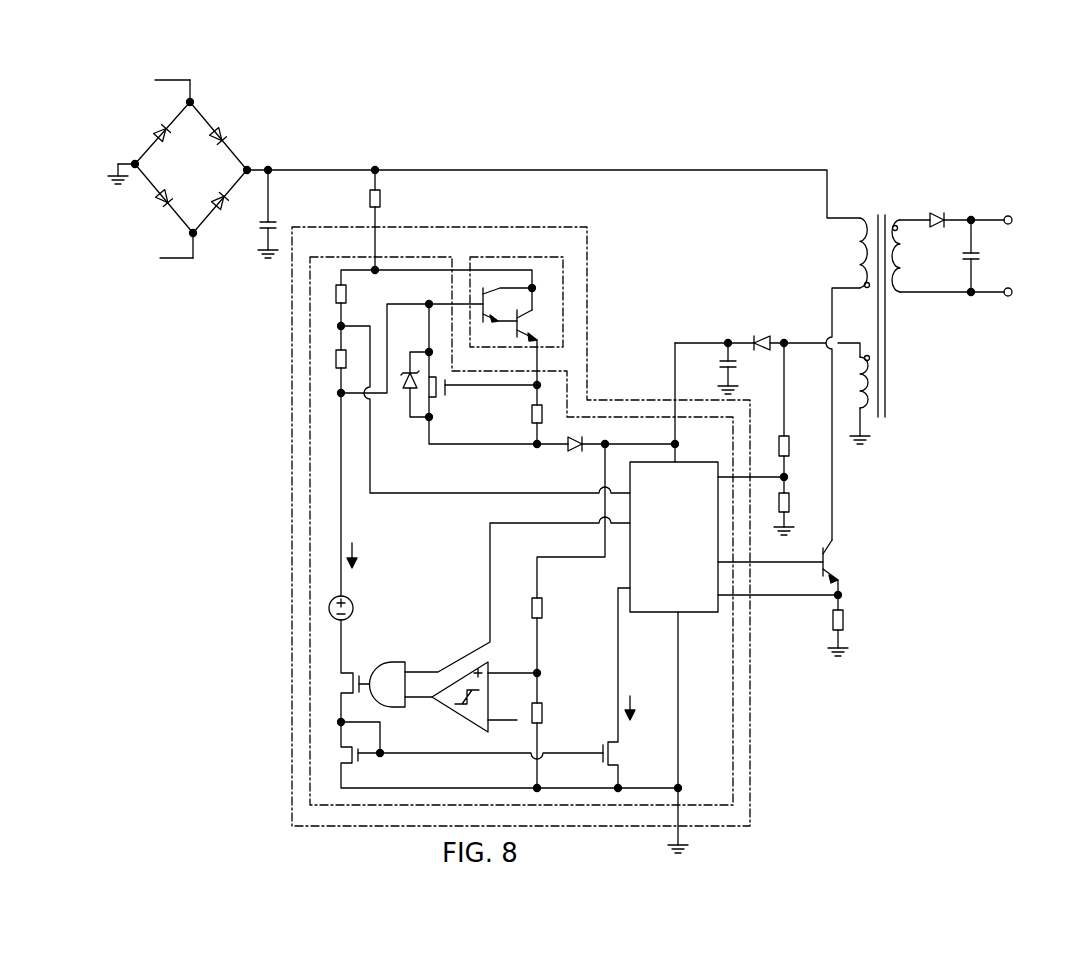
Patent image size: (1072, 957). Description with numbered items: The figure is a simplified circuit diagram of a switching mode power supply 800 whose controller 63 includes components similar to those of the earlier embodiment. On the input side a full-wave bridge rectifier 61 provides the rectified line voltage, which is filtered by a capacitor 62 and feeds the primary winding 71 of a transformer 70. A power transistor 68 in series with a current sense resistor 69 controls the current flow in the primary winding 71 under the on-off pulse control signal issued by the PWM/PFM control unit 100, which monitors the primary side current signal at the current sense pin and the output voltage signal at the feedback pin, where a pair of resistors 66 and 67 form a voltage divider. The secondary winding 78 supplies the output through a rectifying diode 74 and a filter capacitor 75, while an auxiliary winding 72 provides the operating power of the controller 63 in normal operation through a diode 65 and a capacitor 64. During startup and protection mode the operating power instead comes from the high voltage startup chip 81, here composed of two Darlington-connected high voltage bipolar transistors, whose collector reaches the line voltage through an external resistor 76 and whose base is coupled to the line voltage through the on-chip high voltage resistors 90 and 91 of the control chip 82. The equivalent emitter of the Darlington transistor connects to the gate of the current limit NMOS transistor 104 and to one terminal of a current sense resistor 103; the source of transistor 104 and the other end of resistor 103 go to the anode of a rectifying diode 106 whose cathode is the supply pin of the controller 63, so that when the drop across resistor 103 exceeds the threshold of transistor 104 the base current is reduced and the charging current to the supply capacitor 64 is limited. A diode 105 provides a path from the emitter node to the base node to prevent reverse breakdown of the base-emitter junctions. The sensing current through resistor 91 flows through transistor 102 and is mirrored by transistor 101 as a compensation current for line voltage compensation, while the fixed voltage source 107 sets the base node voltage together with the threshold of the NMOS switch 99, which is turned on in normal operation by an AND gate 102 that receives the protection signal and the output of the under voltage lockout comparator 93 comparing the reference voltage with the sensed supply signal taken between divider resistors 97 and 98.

The switching mode power supply 800 is at (613, 130).
The full-wave bridge rectifier 61 is at (200, 171).
The filter capacitor 62 is at (258, 230).
The SMPS controller 63 is at (595, 257).
The filter capacitor 64 is at (713, 363).
The rectifying diode 65 is at (779, 331).
The resistor 66 is at (792, 452).
The resistor 67 is at (792, 515).
The power transistor 68 is at (839, 564).
The current sense resistor 69 is at (846, 621).
The transformer 70 is at (892, 198).
The primary winding 71 is at (857, 253).
The auxiliary winding 72 is at (858, 383).
The rectifying diode 74 is at (937, 205).
The filter capacitor 75 is at (965, 262).
The external resistor 76 is at (363, 203).
The secondary winding 78 is at (907, 248).
The high voltage startup chip 81 is at (504, 254).
The control chip 82 is at (346, 254).
The high voltage resistor 90 is at (332, 292).
The high voltage resistor 91 is at (335, 357).
The under voltage lockout comparator 93 is at (493, 664).
The voltage divider resistor 97 is at (528, 611).
The voltage divider resistor 98 is at (542, 717).
The NMOS transistor 99 is at (343, 677).
The PWM/PFM control unit 100 is at (683, 452).
The transistor 101 is at (621, 761).
The transistor / AND gate 102 is at (390, 662).
The current sense resistor 103 is at (527, 409).
The current limit NMOS transistor 104 is at (450, 393).
The diode 105 is at (400, 400).
The rectifying diode 106 is at (562, 458).
The voltage source 107 is at (325, 603).